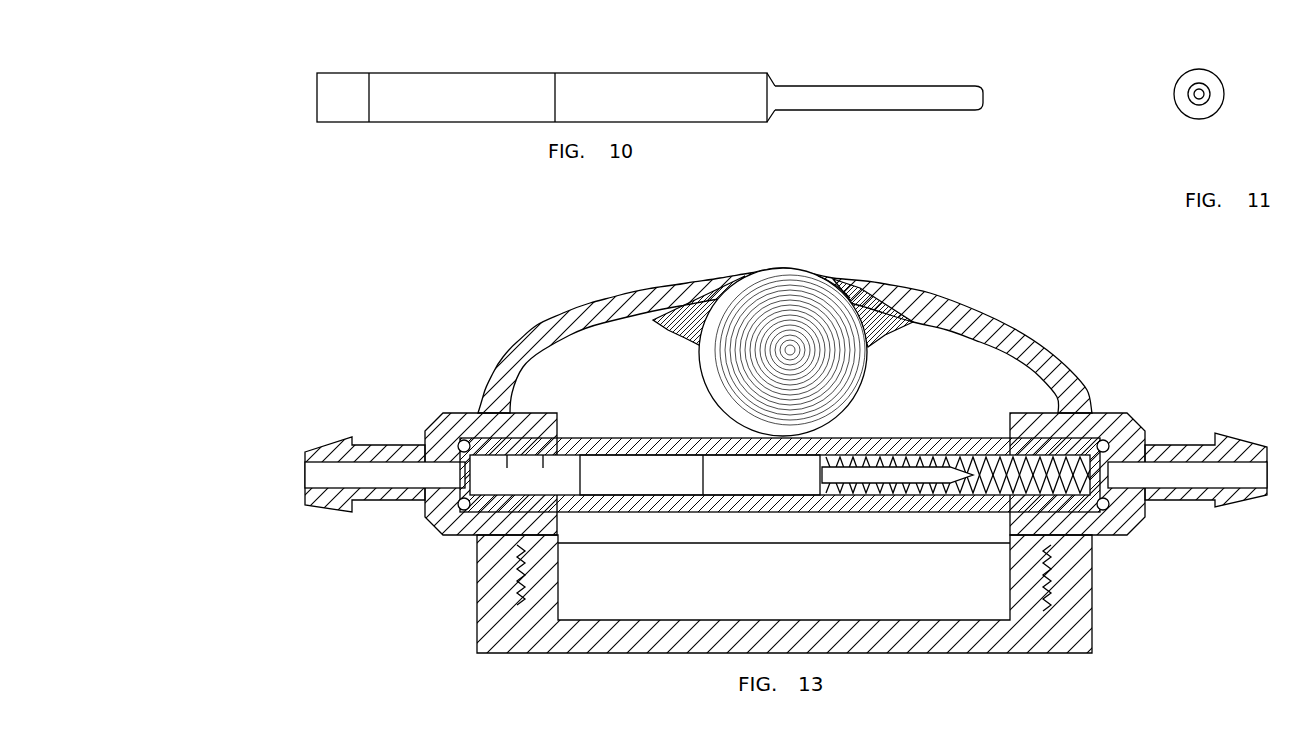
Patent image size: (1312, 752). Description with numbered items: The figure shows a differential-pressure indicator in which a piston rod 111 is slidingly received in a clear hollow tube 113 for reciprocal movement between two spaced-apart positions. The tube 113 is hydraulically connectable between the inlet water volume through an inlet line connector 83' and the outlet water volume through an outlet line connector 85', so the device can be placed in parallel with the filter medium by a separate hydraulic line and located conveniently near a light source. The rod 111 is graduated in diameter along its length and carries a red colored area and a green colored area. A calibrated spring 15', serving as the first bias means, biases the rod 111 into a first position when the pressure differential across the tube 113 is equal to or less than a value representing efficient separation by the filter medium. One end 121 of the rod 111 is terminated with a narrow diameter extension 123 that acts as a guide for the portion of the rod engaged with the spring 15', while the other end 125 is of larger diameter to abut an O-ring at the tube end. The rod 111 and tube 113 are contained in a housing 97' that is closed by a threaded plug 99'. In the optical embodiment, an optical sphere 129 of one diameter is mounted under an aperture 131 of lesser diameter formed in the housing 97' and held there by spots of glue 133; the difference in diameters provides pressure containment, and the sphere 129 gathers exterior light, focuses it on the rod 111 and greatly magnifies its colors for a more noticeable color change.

In FIG. 10, the piston rod 111 is at (748, 121).
In FIG. 11, the piston rod 111 is at (1190, 118).
In FIG. 13, the piston rod 111 is at (662, 497).
In FIG. 10, the other end of rod 125 is at (317, 118).
In FIG. 10, the narrow diameter extension 123 is at (905, 100).
In FIG. 11, the narrow diameter extension 123 is at (1200, 106).
In FIG. 13, the narrow diameter extension 123 is at (895, 497).
In FIG. 10, the one end of rod 121 is at (984, 103).
In FIG. 11, the one end of rod 121 is at (1205, 94).
In FIG. 13, the optical sphere 129 is at (755, 285).
In FIG. 13, the aperture 131 is at (833, 280).
In FIG. 13, the spots of glue 133 is at (683, 340).
In FIG. 13, the clear hollow tube 113 is at (876, 438).
In FIG. 13, the housing 97' is at (785, 340).
In FIG. 13, the threaded plug 99' is at (784, 615).
In FIG. 13, the inlet line connector 83' is at (378, 515).
In FIG. 13, the outlet line connector 85' is at (1187, 503).
In FIG. 13, the calibrated spring 15' is at (958, 527).